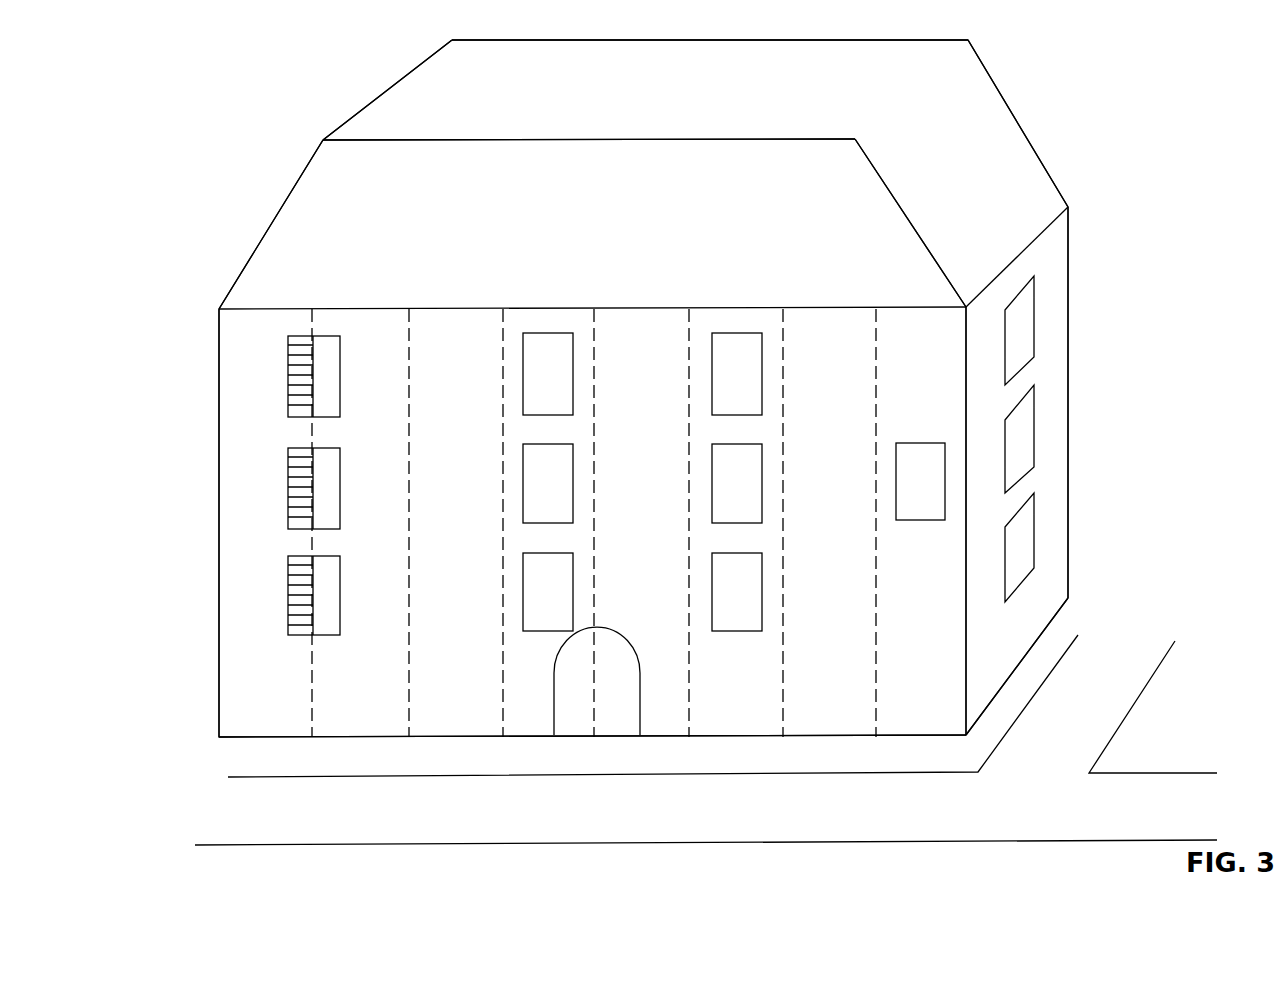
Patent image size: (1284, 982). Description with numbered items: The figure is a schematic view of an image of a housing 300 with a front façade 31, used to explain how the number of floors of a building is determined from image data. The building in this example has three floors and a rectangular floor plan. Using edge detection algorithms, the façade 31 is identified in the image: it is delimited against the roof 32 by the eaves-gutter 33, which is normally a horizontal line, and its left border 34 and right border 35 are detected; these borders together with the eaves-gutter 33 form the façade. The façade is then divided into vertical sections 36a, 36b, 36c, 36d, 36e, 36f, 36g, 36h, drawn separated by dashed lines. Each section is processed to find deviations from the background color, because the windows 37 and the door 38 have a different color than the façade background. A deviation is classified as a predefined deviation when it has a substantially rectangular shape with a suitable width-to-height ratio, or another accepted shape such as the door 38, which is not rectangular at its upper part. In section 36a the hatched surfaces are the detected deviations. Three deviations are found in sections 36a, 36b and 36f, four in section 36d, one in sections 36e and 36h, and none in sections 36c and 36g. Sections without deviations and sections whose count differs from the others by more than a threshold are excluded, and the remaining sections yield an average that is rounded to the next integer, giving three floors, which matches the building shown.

The façade 31 is at (230, 154).
The roof 32 is at (873, 195).
The eaves-gutter 33 is at (479, 723).
The left border 34 is at (219, 639).
The right border 35 is at (972, 624).
The vertical section 36a is at (288, 320).
The vertical section 36b is at (385, 320).
The vertical section 36c is at (478, 320).
The vertical section 36d is at (565, 320).
The vertical section 36e is at (665, 320).
The vertical section 36f is at (757, 320).
The vertical section 36g is at (852, 320).
The vertical section 36h is at (916, 320).
The windows 37 is at (340, 485).
The door 38 is at (623, 723).
The housing 300 is at (1068, 264).